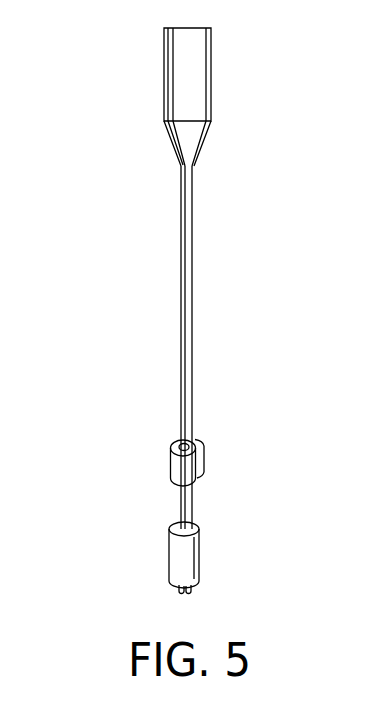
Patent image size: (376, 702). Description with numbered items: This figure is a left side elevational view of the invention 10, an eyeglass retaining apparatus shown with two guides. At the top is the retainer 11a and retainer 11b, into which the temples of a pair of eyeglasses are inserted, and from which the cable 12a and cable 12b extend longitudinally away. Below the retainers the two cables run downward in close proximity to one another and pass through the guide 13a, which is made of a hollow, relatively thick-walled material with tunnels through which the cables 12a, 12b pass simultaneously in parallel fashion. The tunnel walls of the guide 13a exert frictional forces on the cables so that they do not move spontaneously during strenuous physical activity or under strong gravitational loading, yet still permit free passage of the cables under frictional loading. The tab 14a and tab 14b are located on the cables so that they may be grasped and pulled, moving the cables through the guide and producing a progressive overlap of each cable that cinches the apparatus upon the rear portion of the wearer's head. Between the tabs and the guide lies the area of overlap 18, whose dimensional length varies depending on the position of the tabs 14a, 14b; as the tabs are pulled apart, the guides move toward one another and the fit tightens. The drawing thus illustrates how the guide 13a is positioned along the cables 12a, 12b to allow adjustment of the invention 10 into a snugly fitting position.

The invention 10 is at (153, 306).
The retainer 11a is at (222, 94).
The retainer 11b is at (150, 94).
The cable 12a is at (193, 212).
The cable 12b is at (180, 210).
The guide 13a is at (193, 552).
The tab 14a is at (198, 443).
The tab 14b is at (172, 445).
The area of overlap 18 is at (161, 477).